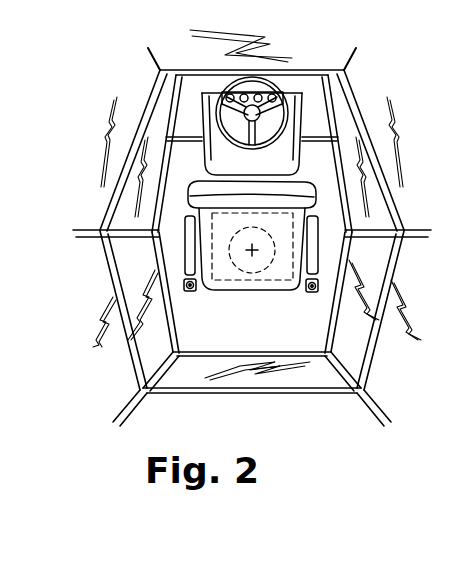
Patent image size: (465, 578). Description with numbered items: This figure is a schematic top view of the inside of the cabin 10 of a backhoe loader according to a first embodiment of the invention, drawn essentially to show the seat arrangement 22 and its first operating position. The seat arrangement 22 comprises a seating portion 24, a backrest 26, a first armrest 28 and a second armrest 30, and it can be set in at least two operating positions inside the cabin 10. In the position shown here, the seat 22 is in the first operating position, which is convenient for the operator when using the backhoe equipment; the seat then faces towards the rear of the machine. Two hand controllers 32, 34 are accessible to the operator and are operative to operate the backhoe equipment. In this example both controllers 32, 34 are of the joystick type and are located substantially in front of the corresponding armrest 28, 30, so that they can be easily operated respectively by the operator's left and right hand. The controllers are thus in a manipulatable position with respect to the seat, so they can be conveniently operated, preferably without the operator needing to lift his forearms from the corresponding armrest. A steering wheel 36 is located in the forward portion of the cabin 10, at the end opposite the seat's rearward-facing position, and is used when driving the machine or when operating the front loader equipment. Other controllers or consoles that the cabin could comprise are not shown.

The cabin 10 is at (80, 213).
The seat arrangement 22 is at (181, 178).
The seating portion 24 is at (225, 272).
The backrest 26 is at (196, 186).
The first armrest 28 is at (313, 248).
The second armrest 30 is at (190, 262).
The hand controller 32 is at (310, 293).
The hand controller 34 is at (186, 283).
The steering wheel 36 is at (269, 84).